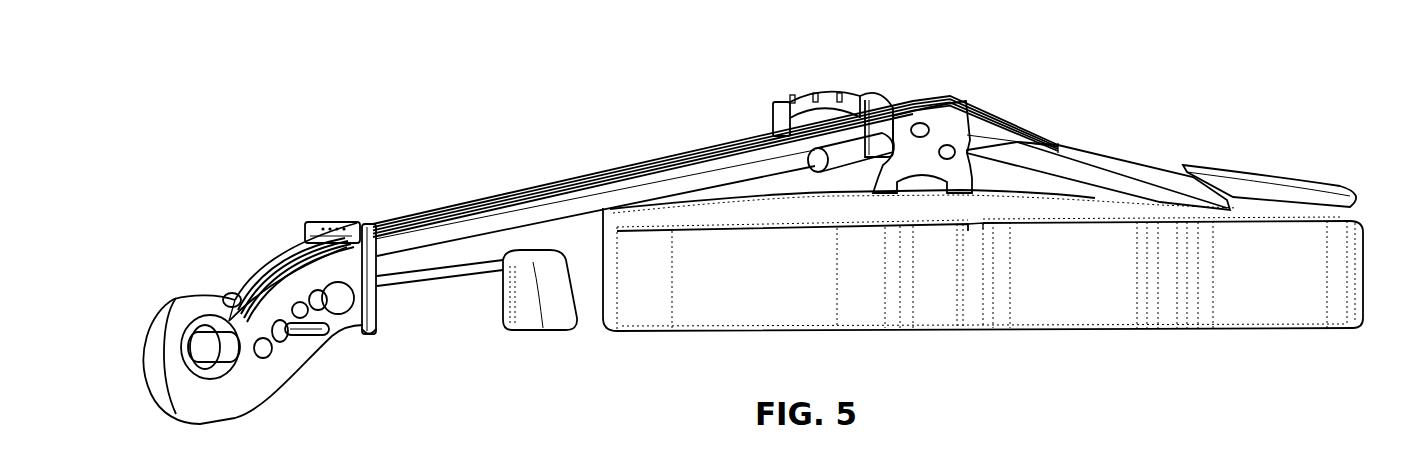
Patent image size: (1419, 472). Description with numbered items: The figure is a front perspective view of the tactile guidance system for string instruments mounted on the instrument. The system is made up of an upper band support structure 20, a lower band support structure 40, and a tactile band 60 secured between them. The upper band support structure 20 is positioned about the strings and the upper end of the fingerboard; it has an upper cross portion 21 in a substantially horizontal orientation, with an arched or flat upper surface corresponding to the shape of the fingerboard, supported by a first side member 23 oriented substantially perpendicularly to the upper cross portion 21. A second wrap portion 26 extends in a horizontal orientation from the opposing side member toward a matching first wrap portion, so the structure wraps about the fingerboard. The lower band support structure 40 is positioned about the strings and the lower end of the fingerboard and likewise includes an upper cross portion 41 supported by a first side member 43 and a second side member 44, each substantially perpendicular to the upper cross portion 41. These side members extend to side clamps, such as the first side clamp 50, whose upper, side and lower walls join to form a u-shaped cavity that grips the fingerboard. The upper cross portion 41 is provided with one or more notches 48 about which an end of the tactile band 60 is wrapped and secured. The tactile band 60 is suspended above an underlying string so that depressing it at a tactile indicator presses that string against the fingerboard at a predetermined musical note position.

The upper band support structure 20 is at (306, 208).
The upper cross portion 21 is at (310, 232).
The first side member 23 is at (377, 292).
The second wrap portion 26 is at (370, 338).
The lower band support structure 40 is at (865, 75).
The upper cross portion 41 is at (797, 93).
The first side member 43 is at (893, 127).
The second side member 44 is at (777, 120).
The notches 48 is at (853, 93).
The first side clamp 50 is at (851, 158).
The tactile band 60 is at (352, 222).